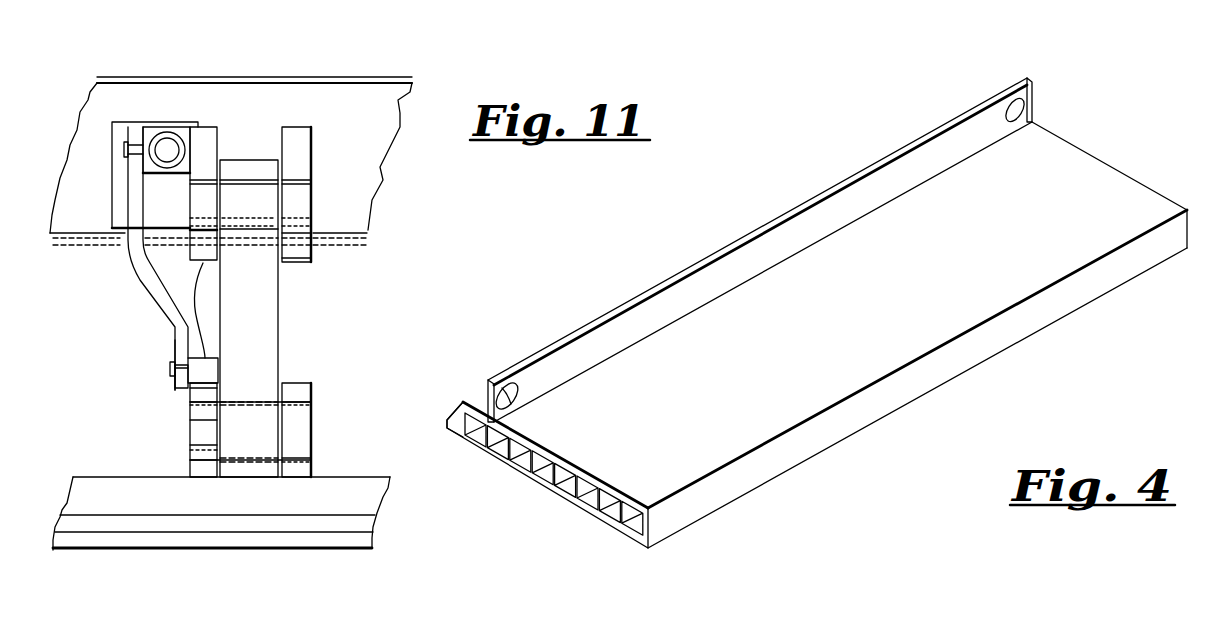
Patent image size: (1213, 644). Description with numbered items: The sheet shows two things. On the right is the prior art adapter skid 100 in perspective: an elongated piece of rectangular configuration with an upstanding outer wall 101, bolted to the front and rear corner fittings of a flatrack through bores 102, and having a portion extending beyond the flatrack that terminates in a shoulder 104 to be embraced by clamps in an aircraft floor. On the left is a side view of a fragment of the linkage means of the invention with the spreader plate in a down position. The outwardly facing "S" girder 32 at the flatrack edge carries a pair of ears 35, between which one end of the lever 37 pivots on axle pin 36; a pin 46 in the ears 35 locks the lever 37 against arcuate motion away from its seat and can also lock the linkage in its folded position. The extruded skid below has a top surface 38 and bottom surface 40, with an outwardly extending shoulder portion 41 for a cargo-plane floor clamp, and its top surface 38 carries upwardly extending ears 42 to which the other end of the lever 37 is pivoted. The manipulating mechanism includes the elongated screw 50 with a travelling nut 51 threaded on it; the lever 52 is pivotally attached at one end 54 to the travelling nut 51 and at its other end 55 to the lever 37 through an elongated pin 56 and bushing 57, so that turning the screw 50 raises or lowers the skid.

In FIG. 11, the "S" girder 32 is at (333, 117).
In FIG. 11, the ears 35 is at (285, 138).
In FIG. 11, the axle pin 36 is at (249, 207).
In FIG. 11, the lever 37 is at (270, 328).
In FIG. 11, the top surface 38 is at (318, 548).
In FIG. 11, the bottom surface 40 is at (327, 477).
In FIG. 11, the shoulder portion 41 is at (356, 517).
In FIG. 11, the ears 42 is at (303, 393).
In FIG. 11, the pin 46 is at (312, 222).
In FIG. 11, the screw 50 is at (167, 147).
In FIG. 11, the travelling nut 51 is at (150, 130).
In FIG. 11, the lever 52 is at (150, 270).
In FIG. 11, the end 54 is at (122, 180).
In FIG. 11, the end 55 is at (175, 347).
In FIG. 11, the elongated pin 56 is at (170, 368).
In FIG. 11, the bushing 57 is at (189, 307).
In FIG. 4, the skid 100 is at (727, 488).
In FIG. 4, the outer wall 101 is at (607, 318).
In FIG. 4, the bores 102 is at (1022, 98).
In FIG. 4, the shoulder 104 is at (447, 415).